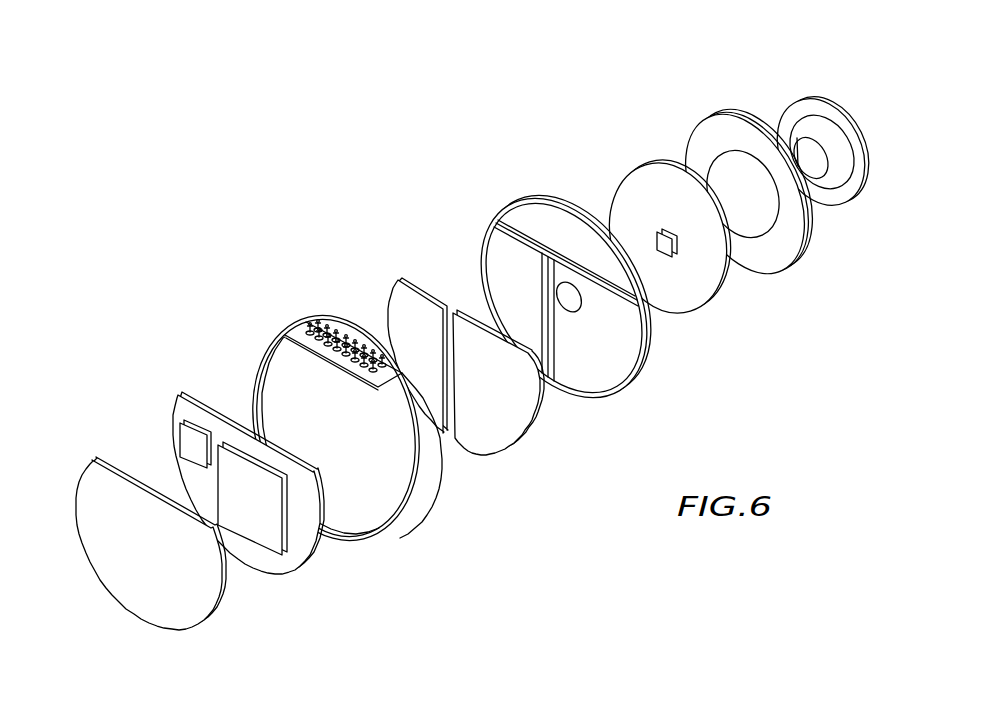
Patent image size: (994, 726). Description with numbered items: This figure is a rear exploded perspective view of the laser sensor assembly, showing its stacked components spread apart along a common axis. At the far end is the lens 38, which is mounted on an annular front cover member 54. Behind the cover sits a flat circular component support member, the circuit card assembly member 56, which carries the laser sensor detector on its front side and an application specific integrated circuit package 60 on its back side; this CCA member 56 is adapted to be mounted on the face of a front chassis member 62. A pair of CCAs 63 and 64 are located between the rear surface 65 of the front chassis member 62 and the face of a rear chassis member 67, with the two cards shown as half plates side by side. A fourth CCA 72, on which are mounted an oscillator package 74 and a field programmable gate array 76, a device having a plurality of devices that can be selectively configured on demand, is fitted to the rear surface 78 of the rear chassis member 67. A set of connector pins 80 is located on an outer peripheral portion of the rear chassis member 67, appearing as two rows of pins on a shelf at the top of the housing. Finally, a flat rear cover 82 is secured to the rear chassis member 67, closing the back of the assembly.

The lens 38 is at (848, 206).
The annular front cover member 54 is at (792, 267).
The circuit card assembly member 56 is at (670, 245).
The application specific integrated circuit package 60 is at (657, 236).
The front chassis member 62 is at (562, 299).
The rear surface 65 is at (498, 257).
The CCA 63 is at (515, 448).
The CCA 64 is at (395, 290).
The rear chassis member 67 is at (340, 418).
The rear surface 78 is at (283, 367).
The connector pins 80 is at (332, 325).
The fourth CCA 72 is at (236, 500).
The oscillator package 74 is at (178, 440).
The field programmable gate array 76 is at (257, 548).
The flat rear cover 82 is at (210, 610).